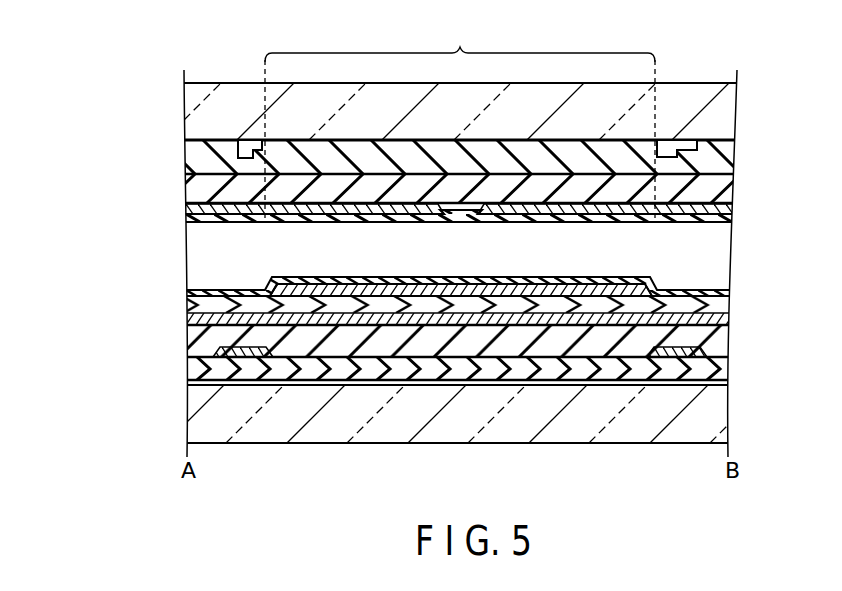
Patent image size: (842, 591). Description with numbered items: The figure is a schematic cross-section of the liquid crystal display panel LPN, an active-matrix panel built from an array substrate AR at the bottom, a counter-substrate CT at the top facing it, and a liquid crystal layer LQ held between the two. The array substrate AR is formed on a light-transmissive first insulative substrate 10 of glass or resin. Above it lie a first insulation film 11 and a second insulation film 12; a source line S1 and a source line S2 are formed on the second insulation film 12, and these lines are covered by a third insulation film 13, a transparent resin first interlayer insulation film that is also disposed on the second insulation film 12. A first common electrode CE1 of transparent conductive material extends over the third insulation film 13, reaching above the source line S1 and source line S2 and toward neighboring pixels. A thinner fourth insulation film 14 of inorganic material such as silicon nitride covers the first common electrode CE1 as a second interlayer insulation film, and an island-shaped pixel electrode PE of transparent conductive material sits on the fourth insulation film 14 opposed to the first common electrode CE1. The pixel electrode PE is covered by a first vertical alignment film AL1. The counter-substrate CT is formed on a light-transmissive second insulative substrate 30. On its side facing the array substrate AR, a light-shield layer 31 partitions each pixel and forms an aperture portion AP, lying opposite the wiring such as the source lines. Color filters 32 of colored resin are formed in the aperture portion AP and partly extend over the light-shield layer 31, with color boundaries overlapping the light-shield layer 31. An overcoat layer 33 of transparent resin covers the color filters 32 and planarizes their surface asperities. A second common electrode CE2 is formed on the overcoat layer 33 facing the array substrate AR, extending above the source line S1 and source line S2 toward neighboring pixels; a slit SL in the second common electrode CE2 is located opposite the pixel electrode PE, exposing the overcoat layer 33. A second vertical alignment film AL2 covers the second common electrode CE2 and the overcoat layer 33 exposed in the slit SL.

The liquid crystal display panel LPN is at (464, 251).
The counter-substrate CT is at (447, 176).
The array substrate AR is at (444, 378).
The liquid crystal layer LQ is at (715, 262).
The aperture portion AP is at (460, 120).
The second insulative substrate 30 is at (720, 107).
The light-shield layer 31 is at (232, 161).
The color filters 32 is at (730, 162).
The overcoat layer 33 is at (728, 192).
The second common electrode CE2 is at (187, 209).
The slit SL is at (461, 217).
The second vertical alignment film AL2 is at (702, 224).
The first vertical alignment film AL1 is at (710, 292).
The pixel electrode PE is at (516, 292).
The fourth insulation film 14 is at (720, 308).
The first common electrode CE1 is at (294, 327).
The third insulation film 13 is at (726, 346).
The source line S1 is at (238, 357).
The source line S2 is at (675, 357).
The second insulation film 12 is at (730, 368).
The first insulation film 11 is at (731, 381).
The first insulative substrate 10 is at (718, 424).